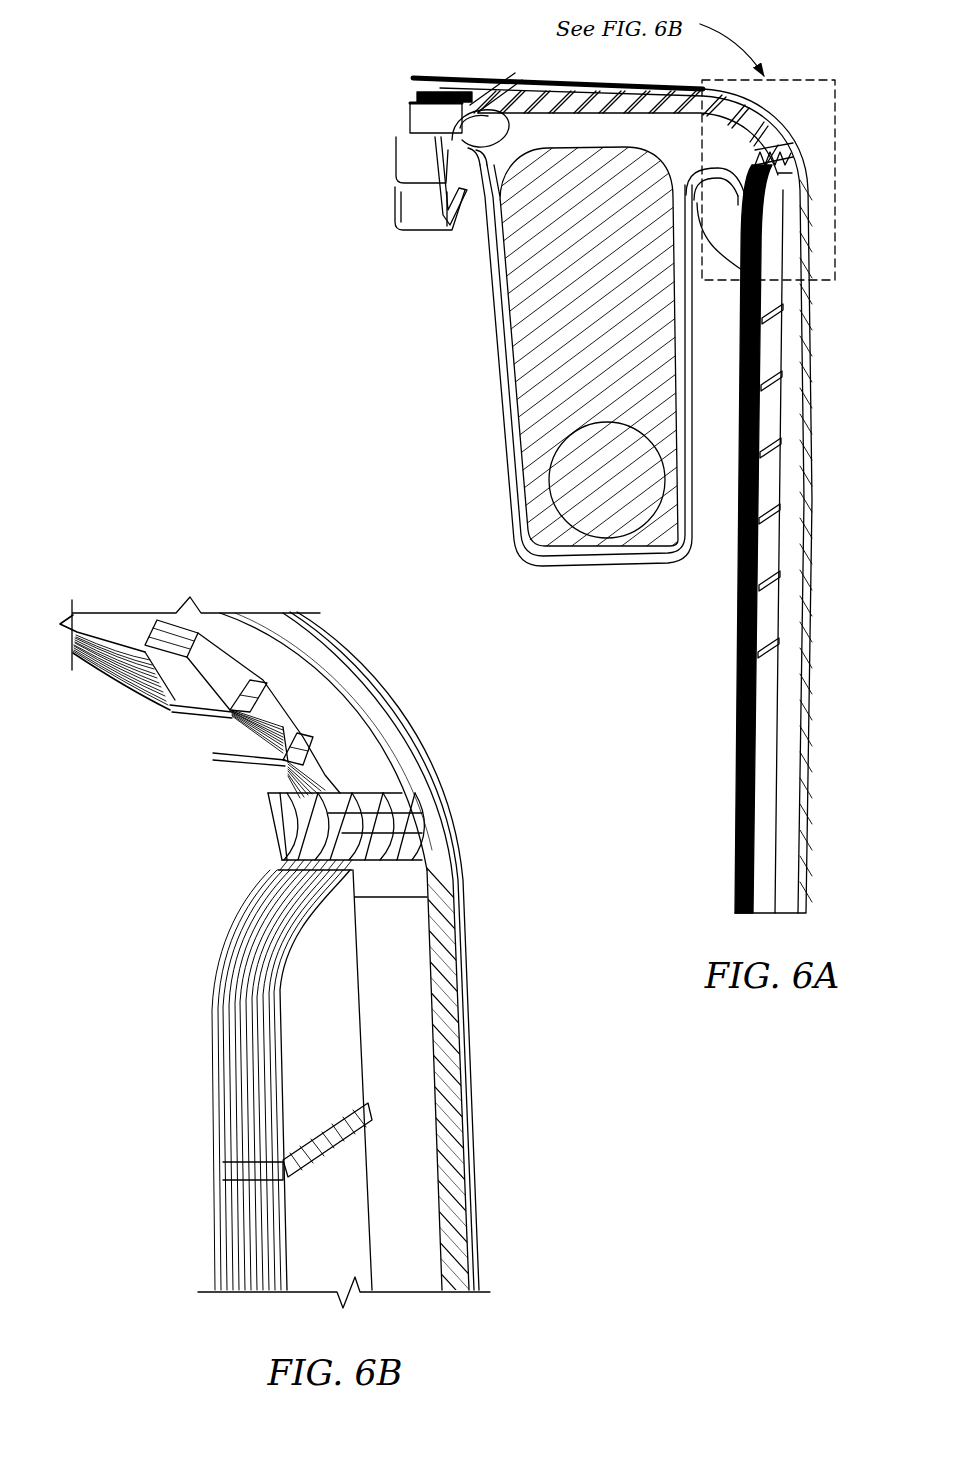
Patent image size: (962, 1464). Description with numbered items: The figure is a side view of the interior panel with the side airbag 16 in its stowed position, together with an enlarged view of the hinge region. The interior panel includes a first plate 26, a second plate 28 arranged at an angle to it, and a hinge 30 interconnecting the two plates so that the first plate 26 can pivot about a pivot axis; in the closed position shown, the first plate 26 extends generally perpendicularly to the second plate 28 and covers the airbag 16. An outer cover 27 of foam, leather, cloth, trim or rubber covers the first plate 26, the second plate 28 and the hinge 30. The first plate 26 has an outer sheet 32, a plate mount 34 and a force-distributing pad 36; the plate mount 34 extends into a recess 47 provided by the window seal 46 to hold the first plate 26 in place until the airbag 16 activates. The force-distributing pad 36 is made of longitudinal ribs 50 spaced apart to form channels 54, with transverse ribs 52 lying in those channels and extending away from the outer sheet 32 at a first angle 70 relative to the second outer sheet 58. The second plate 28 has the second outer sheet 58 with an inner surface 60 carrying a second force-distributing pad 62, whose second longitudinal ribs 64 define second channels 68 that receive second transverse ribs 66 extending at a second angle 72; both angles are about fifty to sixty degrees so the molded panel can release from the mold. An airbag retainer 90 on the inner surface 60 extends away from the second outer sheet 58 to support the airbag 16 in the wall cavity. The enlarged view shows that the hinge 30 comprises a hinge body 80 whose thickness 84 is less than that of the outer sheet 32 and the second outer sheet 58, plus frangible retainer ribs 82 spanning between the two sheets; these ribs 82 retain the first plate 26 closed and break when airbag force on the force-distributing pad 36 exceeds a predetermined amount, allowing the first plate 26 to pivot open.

In FIG. 6A, the side airbag 16 is at (470, 305).
In FIG. 6A, the first plate 26 is at (541, 68).
In FIG. 6B, the first plate 26 is at (360, 639).
In FIG. 6A, the outer cover 27 is at (809, 424).
In FIG. 6A, the second plate 28 is at (822, 477).
In FIG. 6B, the second plate 28 is at (482, 966).
In FIG. 6A, the hinge 30 is at (806, 134).
In FIG. 6B, the hinge 30 is at (210, 827).
In FIG. 6A, the outer sheet 32 is at (655, 95).
In FIG. 6B, the outer sheet 32 is at (283, 611).
In FIG. 6A, the plate mount 34 is at (478, 110).
In FIG. 6B, the force-distributing pad 36 is at (101, 690).
In FIG. 6A, the window seal 46 is at (404, 117).
In FIG. 6A, the recess 47 is at (438, 139).
In FIG. 6B, the longitudinal ribs 50 is at (118, 610).
In FIG. 6B, the transverse ribs 52 is at (160, 618).
In FIG. 6B, the first plurality of channels 54 is at (144, 690).
In FIG. 6B, the second outer sheet 58 is at (448, 1055).
In FIG. 6B, the inner surface 60 is at (422, 1233).
In FIG. 6B, the second force-distributing pad 62 is at (208, 1013).
In FIG. 6B, the second plurality of longitudinal ribs 64 is at (293, 1063).
In FIG. 6B, the second plurality of transverse ribs 66 is at (310, 1163).
In FIG. 6B, the second plurality of channels 68 is at (232, 1127).
In FIG. 6A, the first angle 70 is at (700, 338).
In FIG. 6A, the second angle 72 is at (704, 364).
In FIG. 6B, the hinge body 80 is at (464, 840).
In FIG. 6B, the frangible retainer ribs 82 is at (300, 830).
In FIG. 6B, the thickness 84 is at (378, 843).
In FIG. 6A, the airbag retainer 90 is at (716, 242).